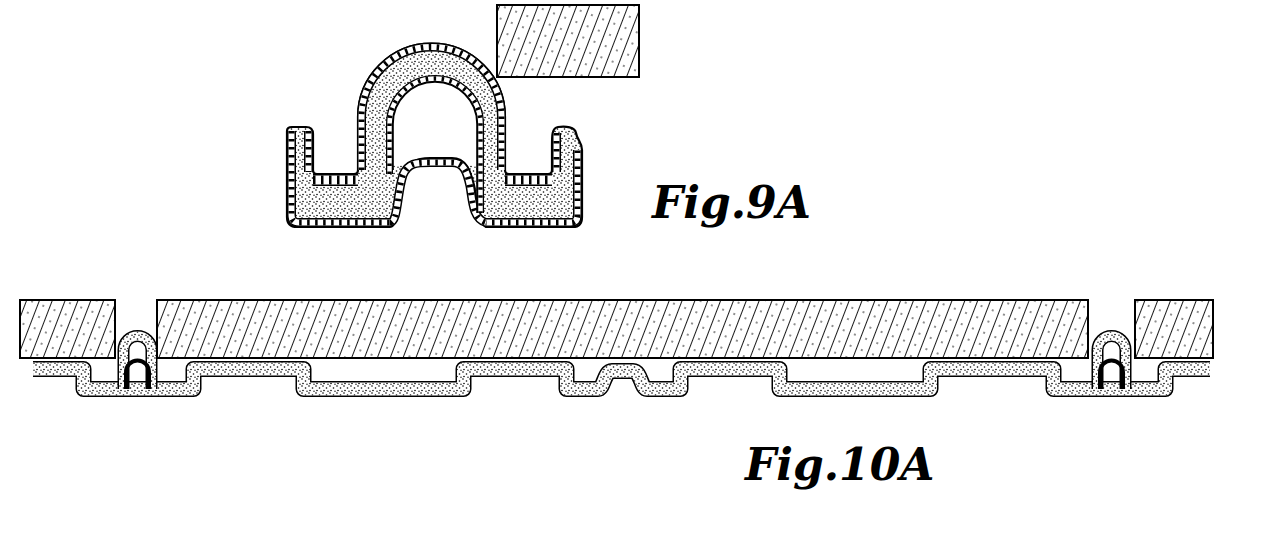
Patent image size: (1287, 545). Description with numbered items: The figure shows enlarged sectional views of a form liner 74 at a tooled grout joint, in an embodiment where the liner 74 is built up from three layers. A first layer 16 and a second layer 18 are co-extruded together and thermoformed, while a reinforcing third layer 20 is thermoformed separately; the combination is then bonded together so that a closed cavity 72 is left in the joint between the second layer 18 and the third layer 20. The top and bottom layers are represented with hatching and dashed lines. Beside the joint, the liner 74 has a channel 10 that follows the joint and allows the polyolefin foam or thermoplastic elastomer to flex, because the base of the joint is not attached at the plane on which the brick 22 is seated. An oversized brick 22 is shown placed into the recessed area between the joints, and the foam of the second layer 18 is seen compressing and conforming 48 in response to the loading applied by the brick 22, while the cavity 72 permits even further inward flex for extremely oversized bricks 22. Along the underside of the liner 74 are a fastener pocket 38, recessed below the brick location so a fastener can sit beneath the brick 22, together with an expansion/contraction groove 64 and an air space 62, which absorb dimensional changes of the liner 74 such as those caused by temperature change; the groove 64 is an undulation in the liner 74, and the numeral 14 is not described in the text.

In FIG. 9A, the channel 10 is at (333, 160).
In FIG. 10A, the channel 10 is at (158, 390).
In FIG. 10A, the channel section 14 is at (640, 385).
In FIG. 9A, the first layer 16 is at (562, 145).
In FIG. 9A, the second layer 18 is at (582, 172).
In FIG. 9A, the third layer 20 is at (583, 215).
In FIG. 9A, the brick 22 is at (622, 40).
In FIG. 10A, the brick 22 is at (808, 320).
In FIG. 10A, the fastener pocket 38 is at (866, 368).
In FIG. 10A, the foam compressing and conforming 48 is at (118, 360).
In FIG. 9A, the air space 62 is at (447, 195).
In FIG. 10A, the expansion/contraction groove 64 is at (620, 385).
In FIG. 9A, the cavity 72 is at (460, 125).
In FIG. 10A, the liner 74 is at (1005, 380).